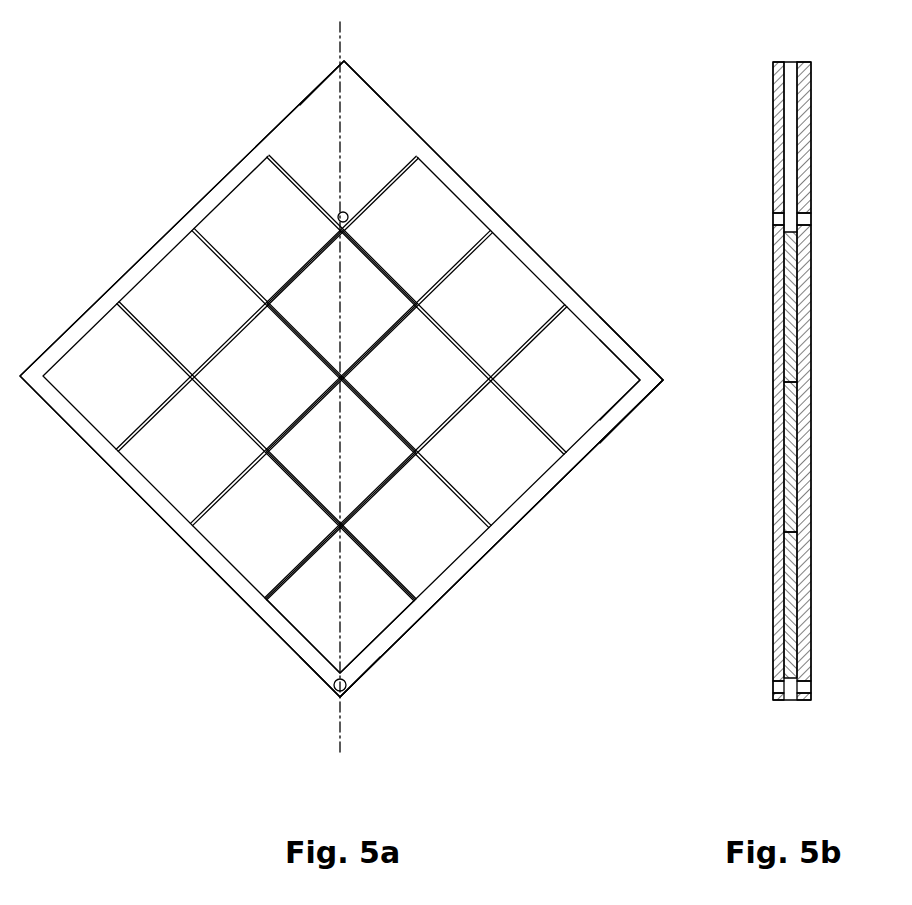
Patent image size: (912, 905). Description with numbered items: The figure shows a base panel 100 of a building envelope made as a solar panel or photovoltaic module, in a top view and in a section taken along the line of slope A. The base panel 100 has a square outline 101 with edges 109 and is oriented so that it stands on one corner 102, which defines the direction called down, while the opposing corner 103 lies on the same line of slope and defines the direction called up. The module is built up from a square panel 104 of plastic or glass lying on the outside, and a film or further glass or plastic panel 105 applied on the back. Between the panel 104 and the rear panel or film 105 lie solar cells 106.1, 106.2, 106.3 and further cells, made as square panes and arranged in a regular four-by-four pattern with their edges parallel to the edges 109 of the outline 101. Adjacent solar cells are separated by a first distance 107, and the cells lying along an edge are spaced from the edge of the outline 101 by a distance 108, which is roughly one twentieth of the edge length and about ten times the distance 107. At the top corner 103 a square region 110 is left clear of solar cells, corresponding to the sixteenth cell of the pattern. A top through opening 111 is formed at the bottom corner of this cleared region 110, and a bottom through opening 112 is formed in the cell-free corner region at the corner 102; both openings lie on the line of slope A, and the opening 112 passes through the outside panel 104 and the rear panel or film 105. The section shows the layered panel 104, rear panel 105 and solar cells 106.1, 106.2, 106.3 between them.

In FIG. 5A, the base panel 100 is at (402, 92).
In FIG. 5B, the base panel 100 is at (755, 55).
In FIG. 5A, the square outline 101 is at (580, 296).
In FIG. 5A, the bottom corner 102 is at (336, 699).
In FIG. 5A, the top corner 103 is at (344, 61).
In FIG. 5A, the square panel 104 is at (405, 627).
In FIG. 5B, the square panel 104 is at (773, 652).
In FIG. 5B, the rear panel or film 105 is at (802, 653).
In FIG. 5A, the solar cell 106.1 is at (362, 596).
In FIG. 5B, the solar cell 106.1 is at (787, 613).
In FIG. 5A, the solar cell 106.2 is at (370, 458).
In FIG. 5B, the solar cell 106.2 is at (787, 462).
In FIG. 5A, the solar cell 106.3 is at (363, 317).
In FIG. 5B, the solar cell 106.3 is at (790, 328).
In FIG. 5A, the first distance 107 is at (116, 448).
In FIG. 5A, the distance from the edge 108 is at (640, 380).
In FIG. 5A, the edges 109 is at (221, 180).
In FIG. 5A, the square region 110 is at (353, 150).
In FIG. 5B, the square region 110 is at (792, 125).
In FIG. 5A, the top through opening 111 is at (338, 217).
In FIG. 5A, the bottom through opening 112 is at (334, 687).